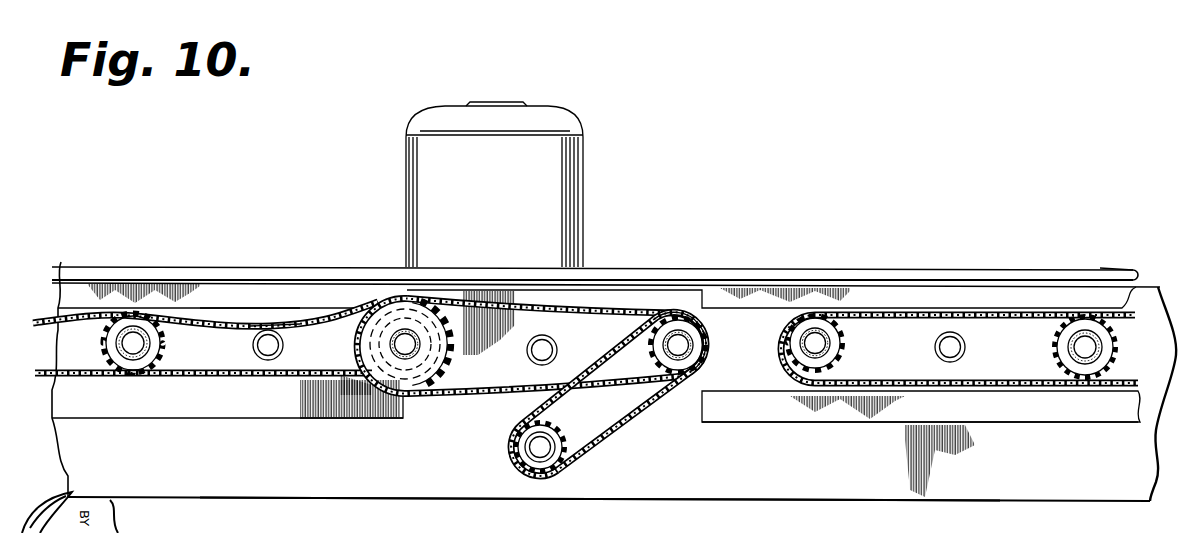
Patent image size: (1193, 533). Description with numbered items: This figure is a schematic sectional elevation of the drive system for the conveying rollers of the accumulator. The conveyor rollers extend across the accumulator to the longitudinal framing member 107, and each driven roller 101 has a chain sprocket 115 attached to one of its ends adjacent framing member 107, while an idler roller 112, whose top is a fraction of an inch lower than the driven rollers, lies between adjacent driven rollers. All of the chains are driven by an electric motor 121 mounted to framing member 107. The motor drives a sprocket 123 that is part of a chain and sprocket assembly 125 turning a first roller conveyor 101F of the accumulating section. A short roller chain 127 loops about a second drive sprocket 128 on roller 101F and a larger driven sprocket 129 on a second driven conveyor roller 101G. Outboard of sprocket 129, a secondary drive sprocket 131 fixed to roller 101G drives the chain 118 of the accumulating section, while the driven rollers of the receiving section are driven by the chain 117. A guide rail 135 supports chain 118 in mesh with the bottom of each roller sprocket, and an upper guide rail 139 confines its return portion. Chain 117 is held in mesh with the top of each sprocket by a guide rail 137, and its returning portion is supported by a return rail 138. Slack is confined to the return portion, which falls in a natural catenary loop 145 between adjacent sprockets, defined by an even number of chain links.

The driven roller 101 is at (814, 336).
The first roller conveyor 101F is at (672, 330).
The second driven conveyor roller 101G is at (405, 329).
The longitudinal framing member 107 is at (300, 480).
The idler roller 112 is at (283, 352).
The chain sprocket 115 is at (175, 355).
The chain 117 is at (920, 314).
The chain 118 is at (206, 312).
The electric motor 121 is at (586, 160).
The sprocket 123 is at (562, 432).
The chain and sprocket assembly 125 is at (604, 451).
The short roller chain 127 is at (610, 310).
The second drive sprocket 128 is at (707, 346).
The larger driven sprocket 129 is at (432, 395).
The secondary drive sprocket 131 is at (432, 349).
The guide rail 135 is at (246, 402).
The guide rail 137 is at (1100, 295).
The return rail 138 is at (885, 405).
The upper guide rail 139 is at (250, 300).
The catenary loop 145 is at (280, 318).